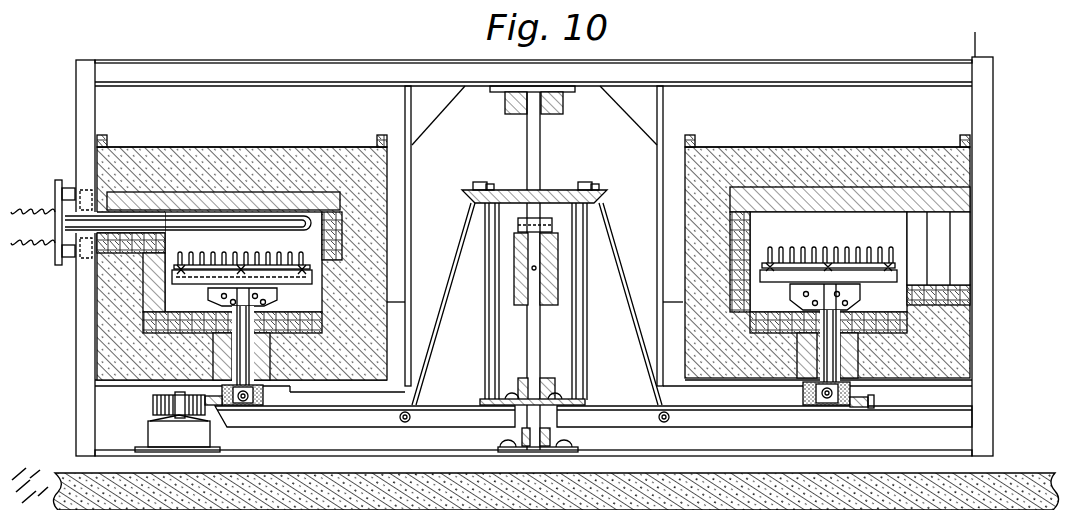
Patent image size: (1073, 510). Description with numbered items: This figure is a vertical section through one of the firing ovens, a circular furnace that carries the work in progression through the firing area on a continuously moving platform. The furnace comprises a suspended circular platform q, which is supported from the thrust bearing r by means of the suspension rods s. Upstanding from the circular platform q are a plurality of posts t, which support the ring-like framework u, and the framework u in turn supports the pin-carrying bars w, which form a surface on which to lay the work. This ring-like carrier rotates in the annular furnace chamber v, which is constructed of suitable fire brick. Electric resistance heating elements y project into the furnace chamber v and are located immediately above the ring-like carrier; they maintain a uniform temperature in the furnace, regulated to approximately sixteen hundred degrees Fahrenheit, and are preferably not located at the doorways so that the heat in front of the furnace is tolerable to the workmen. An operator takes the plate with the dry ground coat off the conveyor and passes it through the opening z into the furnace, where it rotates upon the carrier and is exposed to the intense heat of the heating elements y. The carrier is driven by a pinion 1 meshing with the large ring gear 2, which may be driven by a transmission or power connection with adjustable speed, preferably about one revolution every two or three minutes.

The electric resistance heating elements y is at (212, 214).
The annular furnace chamber v is at (171, 256).
The pin-carrying bars w is at (194, 282).
The ring-like framework u is at (176, 284).
The posts t is at (276, 296).
The pinion 1 is at (153, 404).
The suspended circular platform q is at (268, 426).
The thrust bearing r is at (517, 226).
The suspension rods s is at (438, 322).
The opening z is at (960, 242).
The large ring gear 2 is at (870, 408).